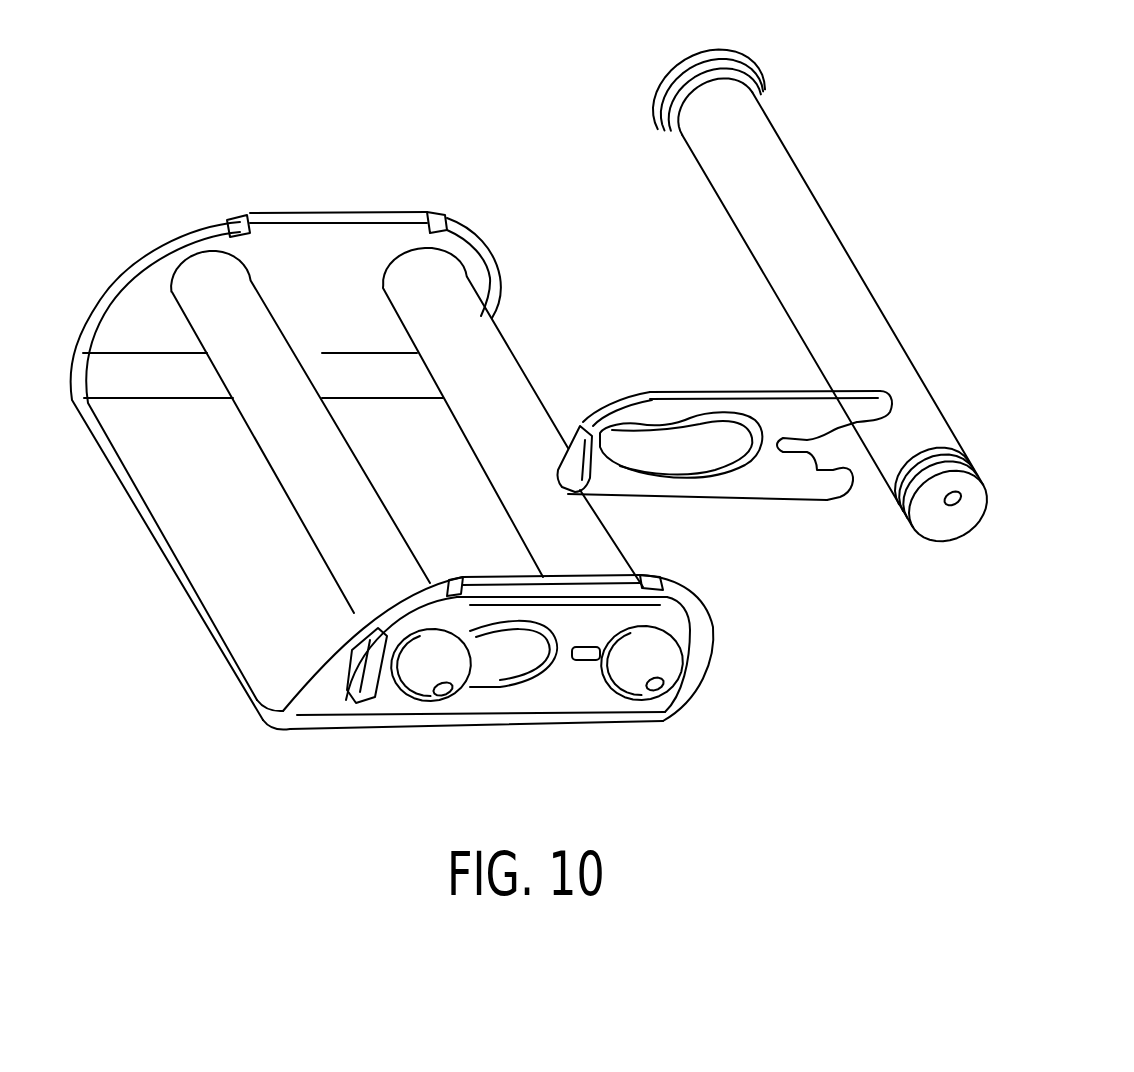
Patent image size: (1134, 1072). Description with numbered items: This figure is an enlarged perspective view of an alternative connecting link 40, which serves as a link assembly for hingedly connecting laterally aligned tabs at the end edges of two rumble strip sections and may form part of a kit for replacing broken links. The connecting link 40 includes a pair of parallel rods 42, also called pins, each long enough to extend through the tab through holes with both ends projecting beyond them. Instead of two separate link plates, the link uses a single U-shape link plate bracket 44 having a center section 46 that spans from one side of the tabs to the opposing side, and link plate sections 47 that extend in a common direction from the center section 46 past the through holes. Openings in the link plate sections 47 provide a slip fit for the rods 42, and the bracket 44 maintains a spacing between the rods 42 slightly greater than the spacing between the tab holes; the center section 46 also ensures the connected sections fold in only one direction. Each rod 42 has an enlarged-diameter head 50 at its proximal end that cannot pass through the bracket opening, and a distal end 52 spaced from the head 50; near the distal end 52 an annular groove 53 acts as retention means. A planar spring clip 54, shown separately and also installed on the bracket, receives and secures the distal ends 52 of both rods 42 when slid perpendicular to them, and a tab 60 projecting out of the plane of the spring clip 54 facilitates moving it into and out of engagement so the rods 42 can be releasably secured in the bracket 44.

The connecting link 40 is at (343, 160).
The rods 42 is at (213, 280).
The link plate bracket 44 is at (232, 676).
The center section 46 is at (168, 568).
The link plate sections 47 is at (500, 277).
The head 50 is at (635, 113).
The distal end 52 is at (931, 549).
The annular groove 53 is at (890, 505).
The spring clip 54 is at (557, 693).
The tab 60 is at (365, 687).